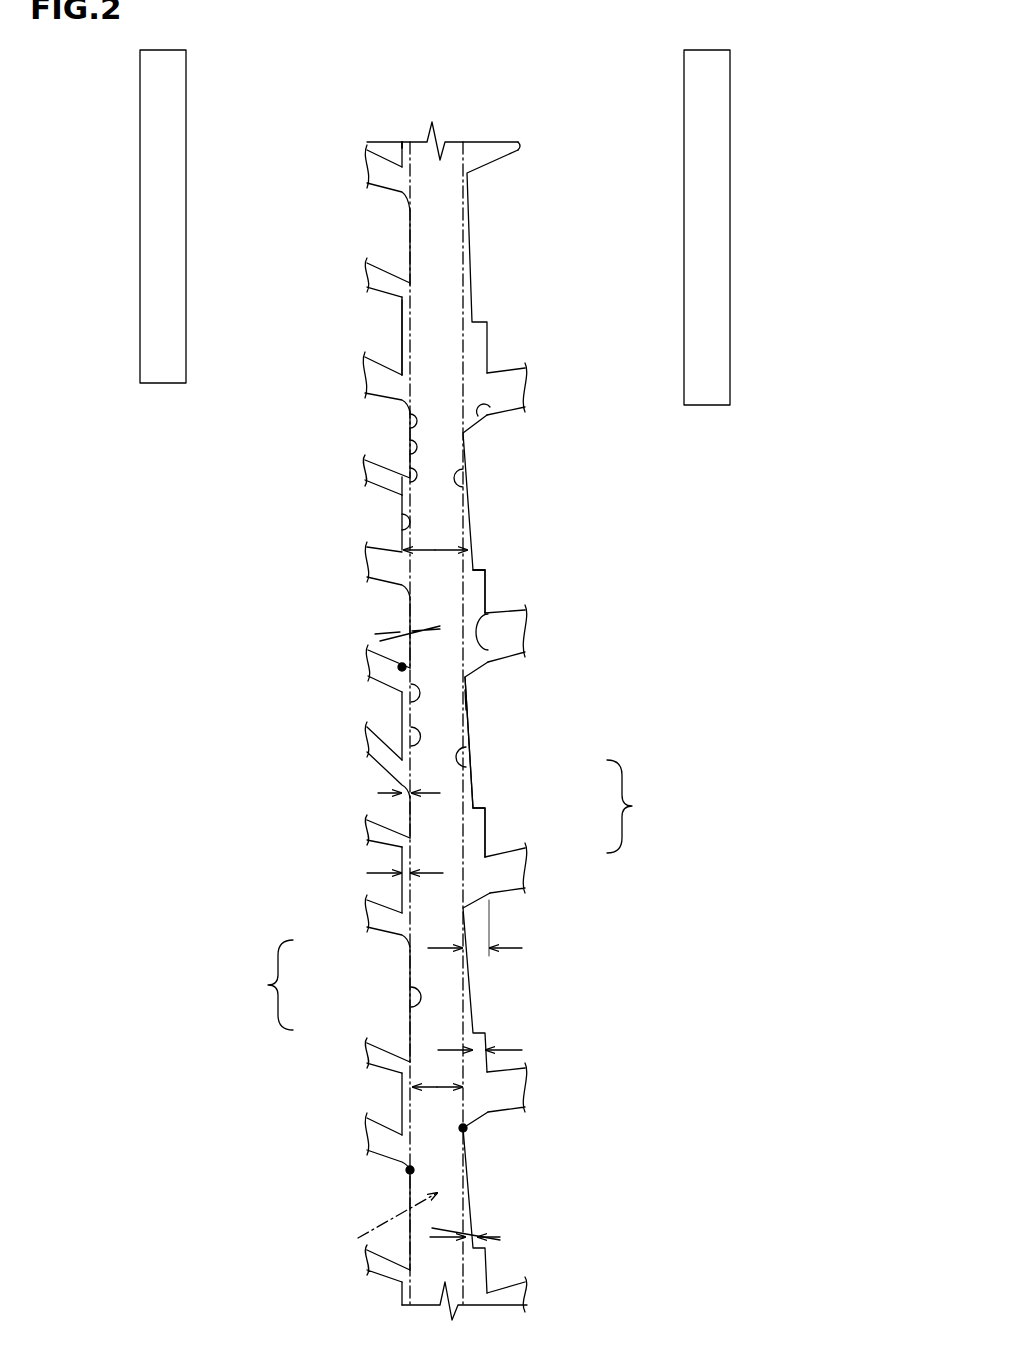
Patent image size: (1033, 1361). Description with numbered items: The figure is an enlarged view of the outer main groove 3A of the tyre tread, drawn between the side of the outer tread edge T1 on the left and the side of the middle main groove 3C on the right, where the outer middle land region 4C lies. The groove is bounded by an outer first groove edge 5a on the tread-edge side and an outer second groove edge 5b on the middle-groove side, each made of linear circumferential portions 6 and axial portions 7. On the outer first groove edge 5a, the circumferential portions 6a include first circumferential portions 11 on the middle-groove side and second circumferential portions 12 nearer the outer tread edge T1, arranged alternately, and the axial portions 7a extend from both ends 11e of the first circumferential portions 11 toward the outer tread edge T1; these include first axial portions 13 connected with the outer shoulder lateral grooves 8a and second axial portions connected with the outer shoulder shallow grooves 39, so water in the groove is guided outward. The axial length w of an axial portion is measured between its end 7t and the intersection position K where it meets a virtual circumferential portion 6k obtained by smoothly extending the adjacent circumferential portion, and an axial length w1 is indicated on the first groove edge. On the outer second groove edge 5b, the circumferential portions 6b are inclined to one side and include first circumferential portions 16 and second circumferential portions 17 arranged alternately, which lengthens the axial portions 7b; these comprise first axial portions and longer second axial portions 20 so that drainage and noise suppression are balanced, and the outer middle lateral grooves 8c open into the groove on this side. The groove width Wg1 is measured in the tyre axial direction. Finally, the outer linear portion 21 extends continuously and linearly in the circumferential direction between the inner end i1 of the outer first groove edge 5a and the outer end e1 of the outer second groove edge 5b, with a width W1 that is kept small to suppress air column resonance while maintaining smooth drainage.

The outer main groove 3A is at (444, 118).
The outer middle land region 4C is at (552, 242).
The middle main groove 3C is at (707, 227).
The outer tread edge T1 is at (163, 216).
The first axial portion 13 is at (403, 340).
The outer shoulder lateral groove 8a is at (400, 392).
The outer middle lateral groove 8c is at (503, 390).
The first circumferential portion 11 is at (410, 446).
The end of first circumferential portion 11e is at (410, 475).
The outer shoulder shallow groove 39 is at (385, 487).
The axial portion of outer first groove edge 7a is at (400, 507).
The second circumferential portion 12 is at (403, 530).
The second axial portion 20 is at (487, 413).
The second circumferential portion 17 is at (465, 490).
The groove width Wg1 is at (470, 542).
The axial portion of outer second groove edge 7b is at (483, 572).
The first circumferential portion 16 is at (480, 653).
The axial portion 7 is at (465, 702).
The end of axial portion 7t is at (465, 700).
The circumferential portion of outer second groove edge 6b is at (467, 773).
The outer second groove edge 5b is at (638, 806).
The circumferential portion 6 is at (411, 737).
The virtual circumferential portion 6k is at (411, 693).
The circumferential portion of outer first groove edge 6a is at (412, 1003).
The outer first groove edge 5a is at (265, 985).
The intersection position K is at (398, 667).
The axial length w1 is at (395, 793).
The axial length of axial portion w is at (400, 873).
The width of outer linear portion W1 is at (413, 1087).
The inner end i1 is at (406, 1171).
The outer end e1 is at (467, 1130).
The outer linear portion 21 is at (358, 1238).